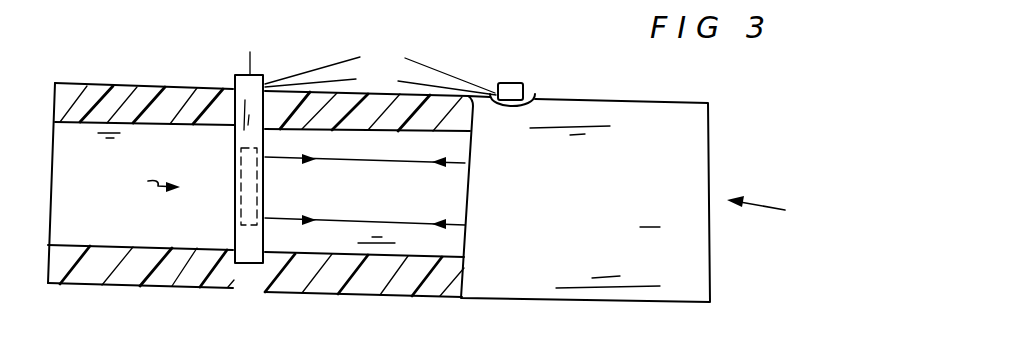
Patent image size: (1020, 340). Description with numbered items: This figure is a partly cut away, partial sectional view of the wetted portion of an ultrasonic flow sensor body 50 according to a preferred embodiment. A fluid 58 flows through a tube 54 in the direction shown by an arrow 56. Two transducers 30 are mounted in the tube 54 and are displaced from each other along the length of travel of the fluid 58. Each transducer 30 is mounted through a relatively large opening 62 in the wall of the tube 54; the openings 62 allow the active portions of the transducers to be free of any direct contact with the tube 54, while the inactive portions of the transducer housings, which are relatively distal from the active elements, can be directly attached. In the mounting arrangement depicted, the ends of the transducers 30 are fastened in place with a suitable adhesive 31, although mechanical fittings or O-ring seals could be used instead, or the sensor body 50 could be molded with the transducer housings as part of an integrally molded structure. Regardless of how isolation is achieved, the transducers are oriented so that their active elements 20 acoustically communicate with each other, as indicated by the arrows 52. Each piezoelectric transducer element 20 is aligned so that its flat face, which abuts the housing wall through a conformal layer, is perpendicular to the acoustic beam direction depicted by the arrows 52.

The active element 20 is at (234, 176).
The transducer 30 is at (380, 63).
The adhesive 31 is at (232, 92).
The ultrasonic flow sensor body 50 is at (778, 227).
The arrows 52 is at (393, 224).
The tube 54 is at (668, 88).
The arrow 56 is at (132, 187).
The fluid 58 is at (156, 230).
The opening 62 is at (231, 95).